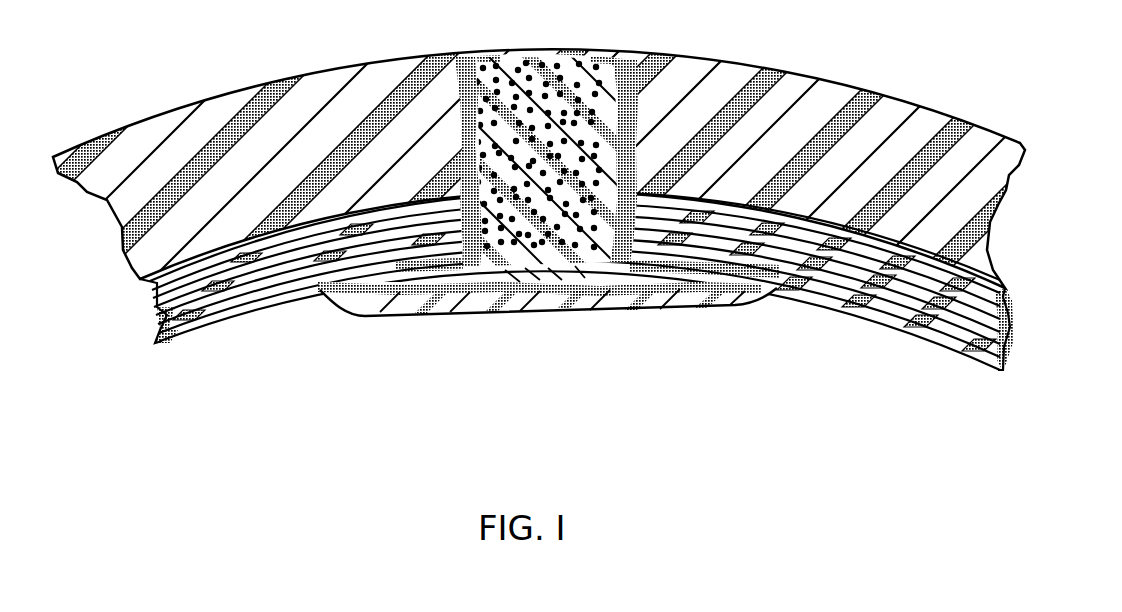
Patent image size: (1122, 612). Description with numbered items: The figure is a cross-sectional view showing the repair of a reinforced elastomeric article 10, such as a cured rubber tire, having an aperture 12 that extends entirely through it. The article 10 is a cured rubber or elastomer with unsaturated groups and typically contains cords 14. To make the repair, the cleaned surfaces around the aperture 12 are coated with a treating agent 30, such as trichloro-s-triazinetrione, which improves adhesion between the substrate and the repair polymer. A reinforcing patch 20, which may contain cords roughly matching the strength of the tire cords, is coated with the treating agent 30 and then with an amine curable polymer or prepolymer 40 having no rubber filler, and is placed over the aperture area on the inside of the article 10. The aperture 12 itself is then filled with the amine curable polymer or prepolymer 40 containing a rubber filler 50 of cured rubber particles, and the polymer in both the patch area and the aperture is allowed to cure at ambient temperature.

The article 10 is at (830, 69).
The aperture 12 is at (463, 56).
The cords 14 is at (1013, 327).
The reinforcing patch 20 is at (753, 307).
The treating agent 30 is at (500, 57).
The amine curable polymer or prepolymer 40 is at (547, 128).
The rubber filler 50 is at (557, 253).